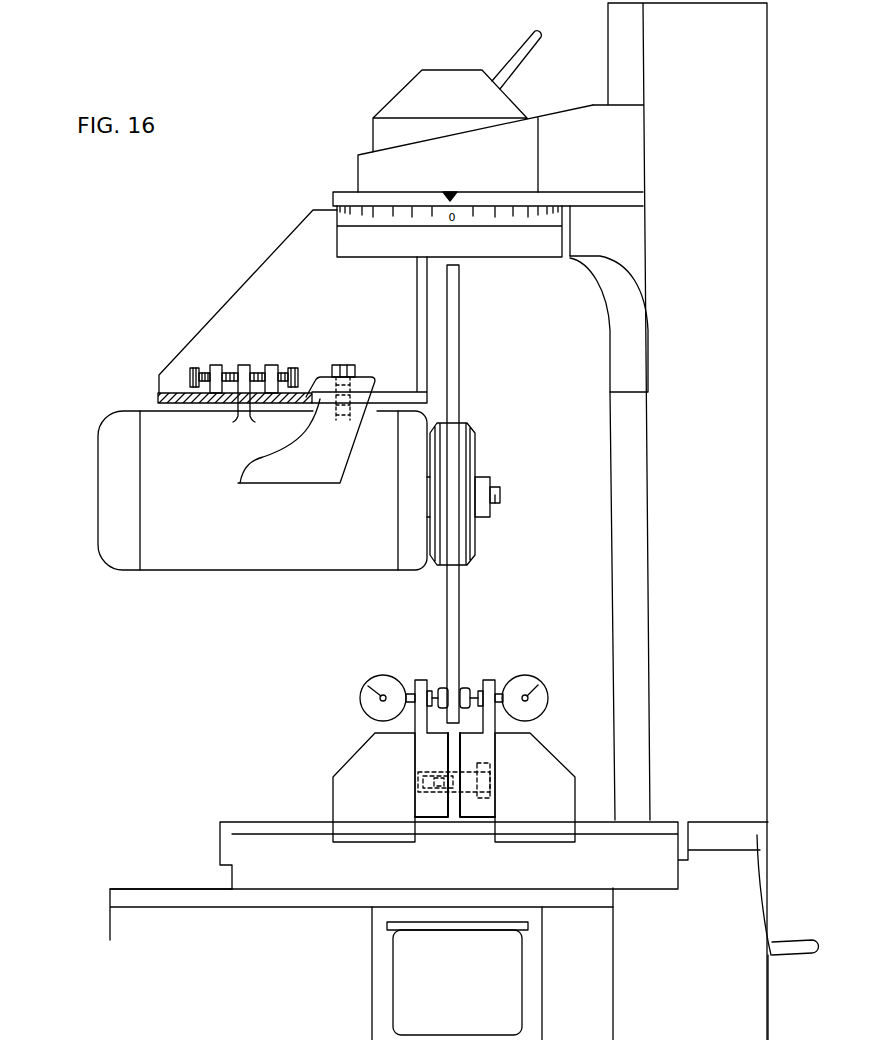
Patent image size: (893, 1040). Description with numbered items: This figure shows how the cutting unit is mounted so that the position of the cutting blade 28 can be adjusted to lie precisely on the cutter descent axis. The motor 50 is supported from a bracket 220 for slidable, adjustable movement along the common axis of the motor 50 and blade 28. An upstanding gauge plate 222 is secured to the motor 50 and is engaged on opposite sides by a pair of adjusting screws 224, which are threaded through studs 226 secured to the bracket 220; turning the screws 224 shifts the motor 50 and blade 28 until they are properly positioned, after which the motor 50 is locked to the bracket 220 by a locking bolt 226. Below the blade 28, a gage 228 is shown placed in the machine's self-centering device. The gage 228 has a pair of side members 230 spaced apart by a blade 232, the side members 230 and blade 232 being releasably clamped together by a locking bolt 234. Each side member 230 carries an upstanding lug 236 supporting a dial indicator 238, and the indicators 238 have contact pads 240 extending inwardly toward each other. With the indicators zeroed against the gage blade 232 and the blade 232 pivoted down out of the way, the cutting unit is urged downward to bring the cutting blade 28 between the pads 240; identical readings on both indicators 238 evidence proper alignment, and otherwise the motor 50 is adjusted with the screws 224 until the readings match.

The cutting blade 28 is at (455, 601).
The motor 50 is at (184, 501).
The bracket 220 is at (282, 265).
The gauge plate 222 is at (245, 365).
The adjusting screws 224 is at (202, 368).
The studs 226 is at (214, 365).
The gage 228 is at (180, 964).
The side members 230 is at (430, 804).
The blade 232 is at (455, 757).
The locking bolt 234 is at (490, 784).
The upstanding lug 236 is at (422, 680).
The dial indicator 238 is at (360, 698).
The contact pads 240 is at (442, 688).